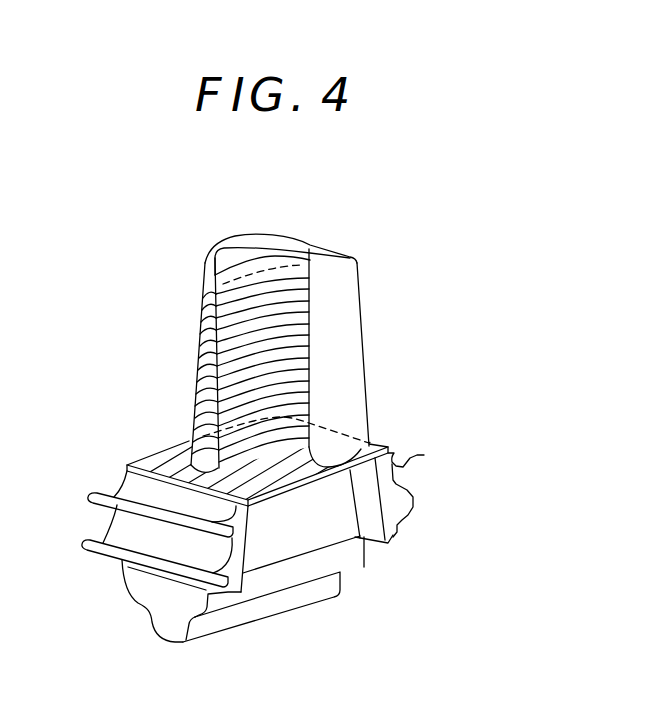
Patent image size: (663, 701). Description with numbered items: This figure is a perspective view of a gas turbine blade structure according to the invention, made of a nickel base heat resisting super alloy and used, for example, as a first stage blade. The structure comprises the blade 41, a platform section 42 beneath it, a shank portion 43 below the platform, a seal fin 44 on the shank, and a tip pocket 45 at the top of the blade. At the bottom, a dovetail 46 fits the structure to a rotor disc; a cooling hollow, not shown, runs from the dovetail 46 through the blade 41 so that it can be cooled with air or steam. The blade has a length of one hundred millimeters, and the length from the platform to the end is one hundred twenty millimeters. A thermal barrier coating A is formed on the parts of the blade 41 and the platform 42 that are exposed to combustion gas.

The blade 41 is at (242, 348).
The platform section 42 is at (163, 457).
The shank portion 43 is at (318, 527).
The seal fin 44 is at (135, 555).
The tip pocket 45 is at (268, 243).
The dovetail 46 is at (256, 610).
The thermal barrier coating A is at (302, 342).